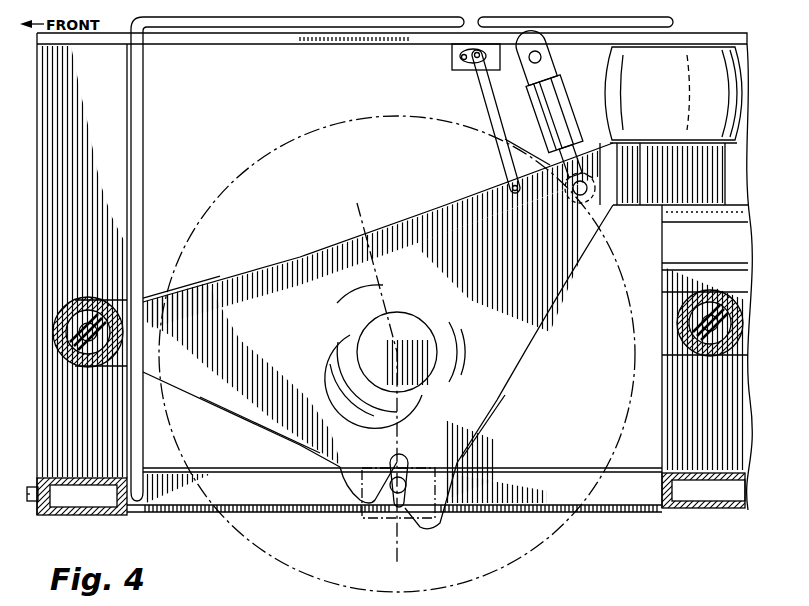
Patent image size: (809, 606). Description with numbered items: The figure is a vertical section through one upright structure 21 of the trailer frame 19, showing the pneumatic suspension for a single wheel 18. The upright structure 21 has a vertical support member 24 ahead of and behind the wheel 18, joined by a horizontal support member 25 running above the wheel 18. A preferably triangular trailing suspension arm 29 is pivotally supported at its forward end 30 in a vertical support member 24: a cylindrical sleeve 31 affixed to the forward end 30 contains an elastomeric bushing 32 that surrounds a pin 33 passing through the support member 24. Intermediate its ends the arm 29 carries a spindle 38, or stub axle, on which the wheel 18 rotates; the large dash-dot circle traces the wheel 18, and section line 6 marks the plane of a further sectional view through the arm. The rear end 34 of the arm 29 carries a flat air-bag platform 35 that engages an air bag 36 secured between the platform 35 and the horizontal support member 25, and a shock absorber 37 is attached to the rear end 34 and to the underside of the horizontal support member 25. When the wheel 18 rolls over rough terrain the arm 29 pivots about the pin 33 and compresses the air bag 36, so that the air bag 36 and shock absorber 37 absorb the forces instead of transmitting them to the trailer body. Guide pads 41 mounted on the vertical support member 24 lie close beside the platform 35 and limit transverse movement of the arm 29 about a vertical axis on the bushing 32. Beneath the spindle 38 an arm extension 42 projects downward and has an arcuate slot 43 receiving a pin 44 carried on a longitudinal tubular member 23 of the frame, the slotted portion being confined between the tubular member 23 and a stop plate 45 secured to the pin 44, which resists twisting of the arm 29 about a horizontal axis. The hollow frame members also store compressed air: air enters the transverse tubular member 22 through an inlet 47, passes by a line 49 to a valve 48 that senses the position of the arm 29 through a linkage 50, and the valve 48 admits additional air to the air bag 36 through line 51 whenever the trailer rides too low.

The section line 6- 6 is at (344, 222).
The wheel 18 is at (540, 540).
The frame 19 is at (610, 510).
The upright structure 21 is at (100, 158).
The transverse tubular member 22 is at (103, 478).
The longitudinal tubular member 23 is at (288, 510).
The vertical support member 24 is at (38, 116).
The horizontal support member 25 is at (303, 40).
The trailing suspension arm 29 is at (512, 380).
The forward end 30 is at (108, 366).
The cylindrical sleeve 31 is at (93, 300).
The elastomeric bushing 32 is at (74, 366).
The pin 33 is at (78, 300).
The rear end 34 is at (622, 208).
The air-bag platform 35 is at (662, 174).
The air bag 36 is at (600, 90).
The shock absorber 37 is at (533, 115).
The spindle 38 is at (422, 335).
The guide pads 41 is at (694, 222).
The arm extension 42 is at (435, 518).
The arcuate slot 43 is at (410, 462).
The pin 44 is at (400, 488).
The stop plate 45 is at (365, 462).
The inlet 47 is at (35, 505).
The valve 48 is at (452, 60).
The line 49 is at (216, 30).
The linkage 50 is at (480, 86).
The line 51 is at (678, 22).